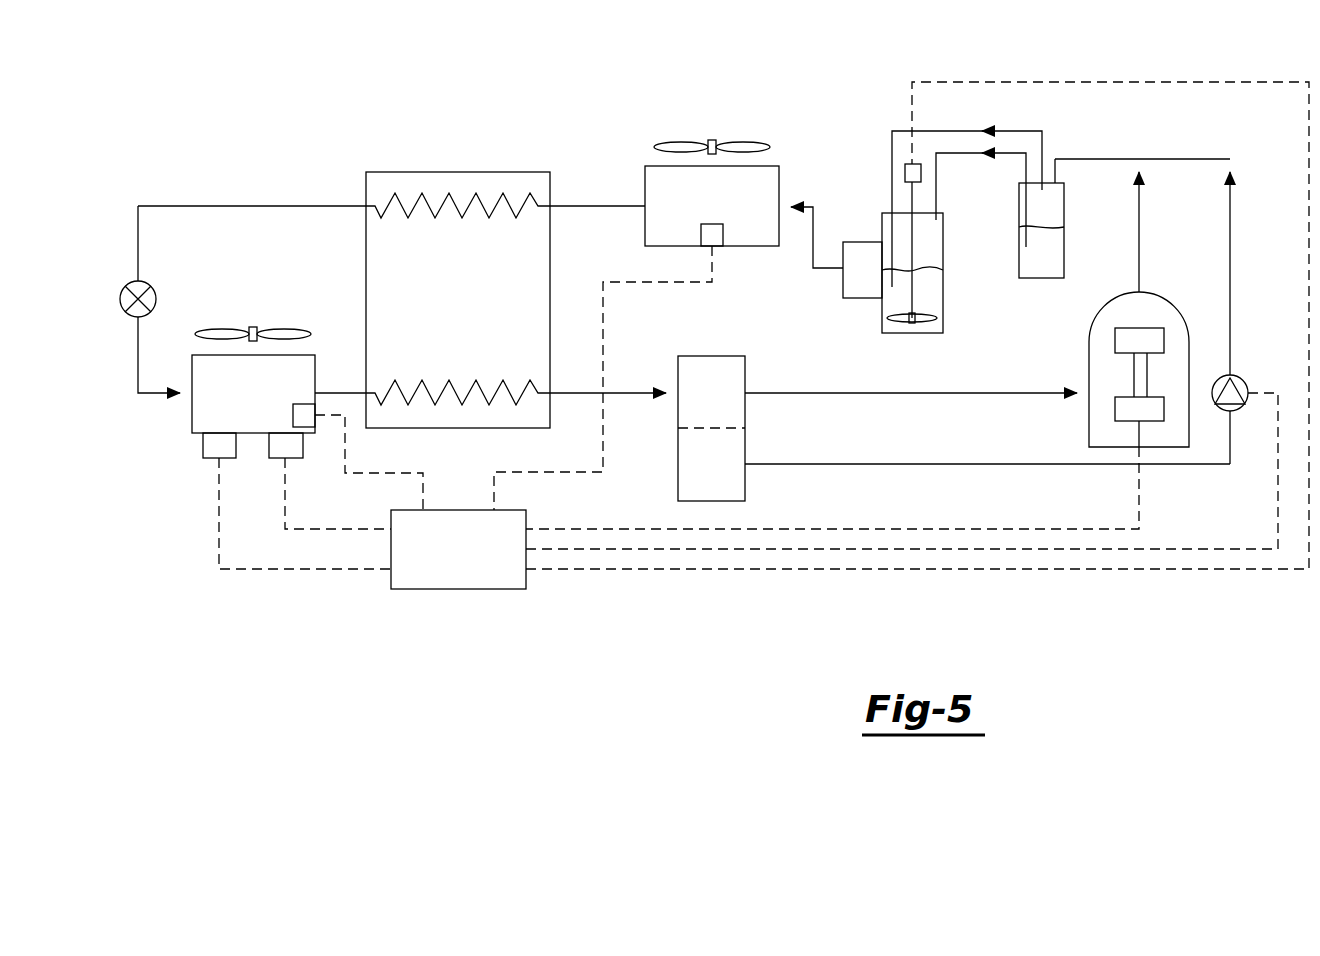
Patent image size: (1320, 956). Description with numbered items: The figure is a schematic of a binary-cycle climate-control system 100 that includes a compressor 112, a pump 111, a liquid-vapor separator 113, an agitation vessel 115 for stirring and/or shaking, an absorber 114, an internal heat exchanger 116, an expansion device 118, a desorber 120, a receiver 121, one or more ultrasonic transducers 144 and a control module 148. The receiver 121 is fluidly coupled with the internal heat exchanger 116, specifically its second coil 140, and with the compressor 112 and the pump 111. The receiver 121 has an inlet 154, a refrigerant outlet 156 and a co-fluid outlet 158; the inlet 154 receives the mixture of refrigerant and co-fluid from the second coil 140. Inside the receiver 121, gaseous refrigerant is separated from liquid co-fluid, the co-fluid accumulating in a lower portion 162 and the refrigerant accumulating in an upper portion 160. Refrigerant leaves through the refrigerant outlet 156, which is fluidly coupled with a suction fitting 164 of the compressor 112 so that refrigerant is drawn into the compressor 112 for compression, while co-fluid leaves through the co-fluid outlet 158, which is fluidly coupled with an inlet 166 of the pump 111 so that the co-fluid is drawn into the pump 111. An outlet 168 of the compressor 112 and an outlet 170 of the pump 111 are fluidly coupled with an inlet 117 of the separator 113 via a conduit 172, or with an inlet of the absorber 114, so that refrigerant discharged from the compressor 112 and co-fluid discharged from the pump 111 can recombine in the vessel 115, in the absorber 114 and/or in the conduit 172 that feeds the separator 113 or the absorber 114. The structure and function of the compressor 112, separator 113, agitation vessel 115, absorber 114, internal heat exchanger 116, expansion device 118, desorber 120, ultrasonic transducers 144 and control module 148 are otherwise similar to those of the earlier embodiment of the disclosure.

The binary-cycle climate-control system 100 is at (1176, 48).
The pump 111 is at (1238, 378).
The compressor 112 is at (1142, 292).
The liquid-vapor separator 113 is at (1031, 284).
The absorber 114 is at (779, 173).
The agitation vessel 115 is at (902, 342).
The internal heat exchanger 116 is at (528, 168).
The inlet of the separator 117 is at (1052, 183).
The expansion device 118 is at (130, 287).
The desorber 120 is at (192, 420).
The receiver 121 is at (731, 350).
The second coil 140 is at (432, 390).
The ultrasonic transducers 144 is at (208, 460).
The control module 148 is at (484, 590).
The inlet 154 is at (672, 392).
The refrigerant outlet 156 is at (748, 393).
The co-fluid outlet 158 is at (748, 464).
The upper portion 160 is at (697, 366).
The lower portion 162 is at (678, 478).
The suction fitting 164 is at (1088, 390).
The inlet of the pump 166 is at (1232, 411).
The outlet of the compressor 168 is at (1139, 292).
The outlet of the pump 170 is at (1224, 378).
The conduit 172 is at (1113, 159).